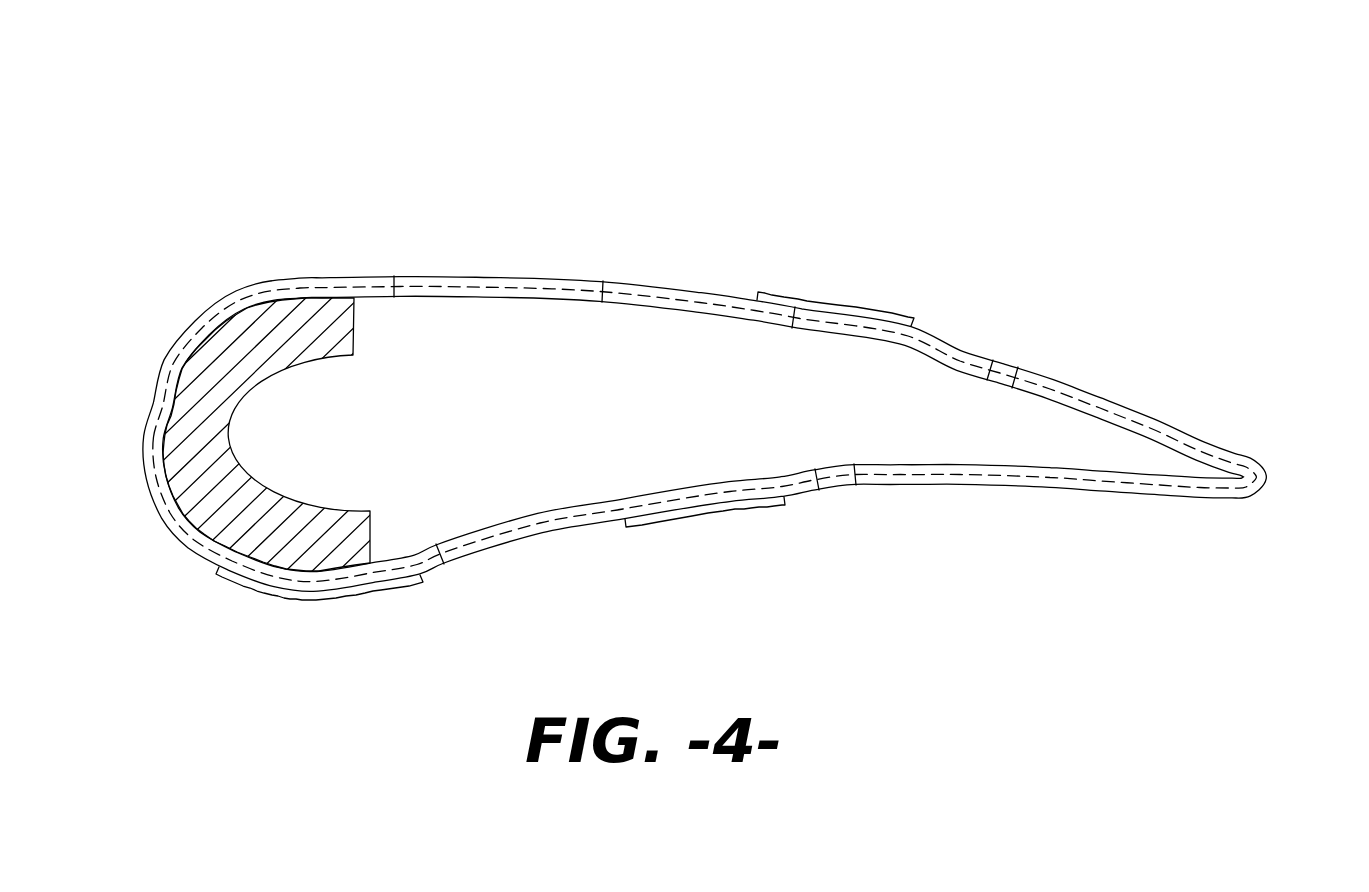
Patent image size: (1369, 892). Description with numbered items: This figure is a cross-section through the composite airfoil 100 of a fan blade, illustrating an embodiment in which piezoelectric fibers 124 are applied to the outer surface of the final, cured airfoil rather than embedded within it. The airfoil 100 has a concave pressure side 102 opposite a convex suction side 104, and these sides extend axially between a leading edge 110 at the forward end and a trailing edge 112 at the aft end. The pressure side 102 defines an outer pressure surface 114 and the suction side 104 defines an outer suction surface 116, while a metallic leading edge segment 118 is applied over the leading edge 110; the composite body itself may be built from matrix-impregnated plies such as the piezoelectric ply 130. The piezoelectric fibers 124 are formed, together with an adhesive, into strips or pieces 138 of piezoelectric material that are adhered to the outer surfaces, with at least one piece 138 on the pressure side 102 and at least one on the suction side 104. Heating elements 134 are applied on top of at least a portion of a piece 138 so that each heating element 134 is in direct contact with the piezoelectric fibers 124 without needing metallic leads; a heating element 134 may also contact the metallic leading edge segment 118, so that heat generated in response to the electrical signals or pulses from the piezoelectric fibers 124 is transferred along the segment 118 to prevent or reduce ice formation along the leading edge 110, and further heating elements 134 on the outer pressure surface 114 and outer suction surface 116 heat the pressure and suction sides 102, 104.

The composite airfoil 100 is at (1003, 197).
The pressure side 102 is at (731, 516).
The suction side 104 is at (748, 278).
The leading edge 110 is at (113, 444).
The trailing edge 112 is at (1280, 478).
The outer pressure surface 114 is at (819, 492).
The outer suction surface 116 is at (603, 281).
The metallic leading edge segment 118 is at (272, 345).
The piezoelectric fibers 124 is at (1017, 375).
The piezoelectric ply 130 is at (167, 357).
The heating element 134 is at (841, 306).
The piece of piezoelectric material 138 is at (452, 276).